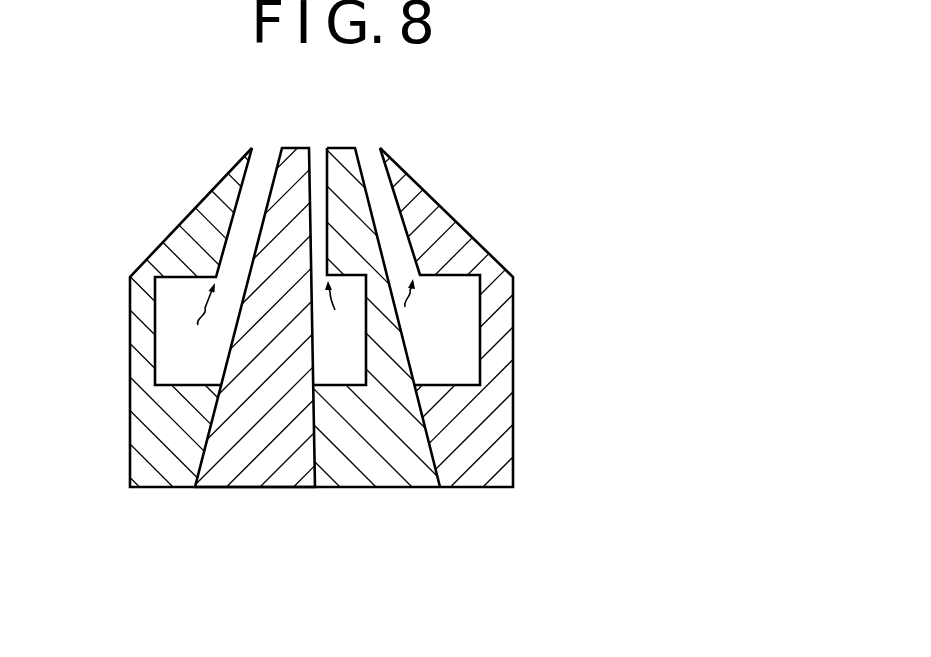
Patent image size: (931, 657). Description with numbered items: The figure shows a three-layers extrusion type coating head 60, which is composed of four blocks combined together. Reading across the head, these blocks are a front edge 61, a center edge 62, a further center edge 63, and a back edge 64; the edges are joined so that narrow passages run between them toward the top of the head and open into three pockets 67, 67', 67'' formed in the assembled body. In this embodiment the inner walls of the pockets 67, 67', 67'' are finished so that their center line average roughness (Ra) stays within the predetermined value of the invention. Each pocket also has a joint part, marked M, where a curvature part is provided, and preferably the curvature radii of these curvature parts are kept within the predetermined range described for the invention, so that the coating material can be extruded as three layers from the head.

The three-layers extrusion type coating head 60 is at (508, 178).
The front edge 61 is at (153, 450).
The center edge 62 is at (248, 483).
The center edge 63 is at (370, 478).
The back edge 64 is at (478, 478).
The pocket 67 is at (125, 331).
The pocket 67' is at (467, 330).
The pocket 67'' is at (516, 309).